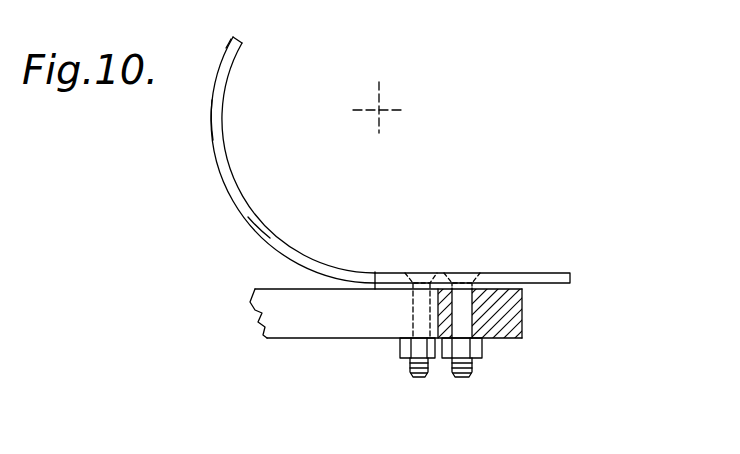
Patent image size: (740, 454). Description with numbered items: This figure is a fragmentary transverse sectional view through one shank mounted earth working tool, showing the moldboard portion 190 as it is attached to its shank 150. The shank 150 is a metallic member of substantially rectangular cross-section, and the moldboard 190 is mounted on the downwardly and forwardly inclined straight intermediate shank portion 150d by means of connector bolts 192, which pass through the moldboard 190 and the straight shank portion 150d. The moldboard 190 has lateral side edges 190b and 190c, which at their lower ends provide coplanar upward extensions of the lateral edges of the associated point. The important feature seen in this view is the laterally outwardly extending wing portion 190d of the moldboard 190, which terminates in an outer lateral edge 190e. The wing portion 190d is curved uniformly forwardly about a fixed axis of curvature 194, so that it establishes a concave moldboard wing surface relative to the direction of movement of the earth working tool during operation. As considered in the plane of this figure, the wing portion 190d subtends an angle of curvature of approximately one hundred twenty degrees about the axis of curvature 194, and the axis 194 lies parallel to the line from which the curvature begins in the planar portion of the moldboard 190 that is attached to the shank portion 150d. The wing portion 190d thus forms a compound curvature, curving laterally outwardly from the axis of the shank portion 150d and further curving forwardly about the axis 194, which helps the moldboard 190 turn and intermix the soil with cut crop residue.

The shank 150 is at (300, 351).
The straight intermediate shank portion 150d is at (522, 322).
The moldboard portion 190 is at (222, 205).
The lateral side edge 190b is at (570, 279).
The lateral side edge 190c is at (258, 225).
The wing portion 190d is at (222, 118).
The outer lateral edge 190e is at (236, 35).
The connector bolts 192 is at (460, 377).
The axis of curvature 194 is at (379, 110).